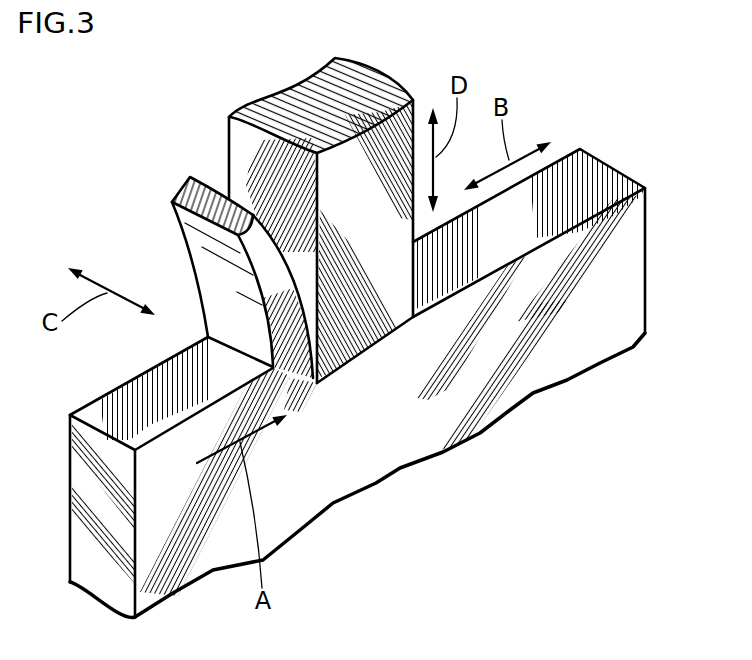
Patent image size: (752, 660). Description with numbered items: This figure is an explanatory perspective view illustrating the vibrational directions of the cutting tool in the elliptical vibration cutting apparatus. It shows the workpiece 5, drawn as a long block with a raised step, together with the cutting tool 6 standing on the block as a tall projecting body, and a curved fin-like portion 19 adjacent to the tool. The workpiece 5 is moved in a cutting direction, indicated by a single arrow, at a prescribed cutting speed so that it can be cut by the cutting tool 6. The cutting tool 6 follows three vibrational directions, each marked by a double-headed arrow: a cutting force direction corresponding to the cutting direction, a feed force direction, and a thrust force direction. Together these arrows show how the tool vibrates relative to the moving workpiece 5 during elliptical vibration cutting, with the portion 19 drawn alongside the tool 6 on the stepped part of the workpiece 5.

The workpiece 5 is at (626, 270).
The cutting tool 6 is at (248, 159).
The curved fin / blade portion 19 is at (222, 280).